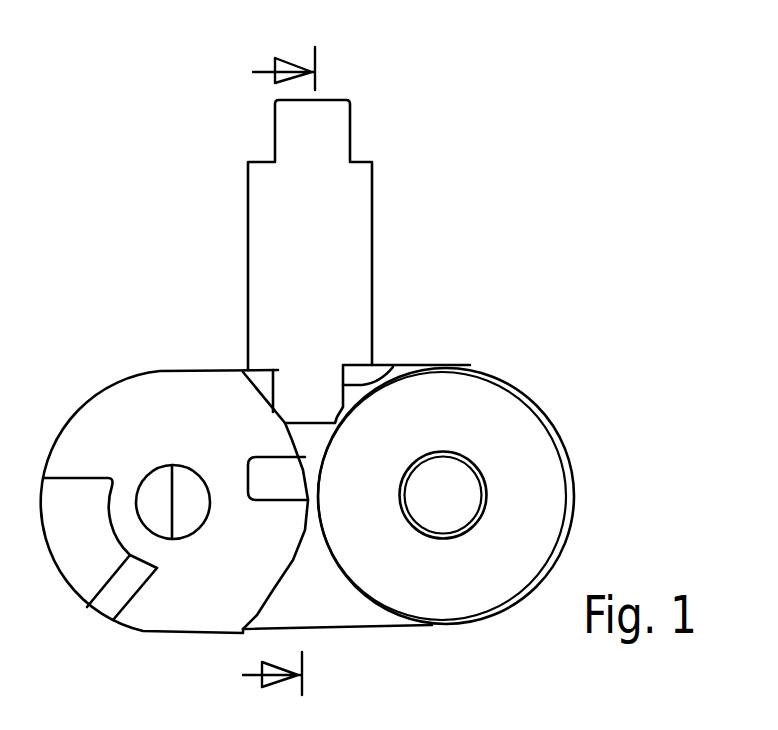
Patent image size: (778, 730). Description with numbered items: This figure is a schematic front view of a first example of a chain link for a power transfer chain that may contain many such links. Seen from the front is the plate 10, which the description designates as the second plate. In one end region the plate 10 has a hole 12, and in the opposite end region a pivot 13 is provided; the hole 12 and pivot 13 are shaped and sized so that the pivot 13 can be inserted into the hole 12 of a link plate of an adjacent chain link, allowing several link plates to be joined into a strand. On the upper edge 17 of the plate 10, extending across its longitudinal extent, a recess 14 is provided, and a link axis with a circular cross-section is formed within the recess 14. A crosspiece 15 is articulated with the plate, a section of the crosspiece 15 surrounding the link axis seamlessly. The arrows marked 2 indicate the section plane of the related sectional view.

The section line 2- 2 is at (267, 364).
The roller 10 is at (525, 422).
The axle bore 12 is at (467, 498).
The pivot hole 13 is at (157, 513).
The wedge insert 14 is at (392, 365).
The shank 15 is at (347, 242).
The body 17 is at (195, 370).